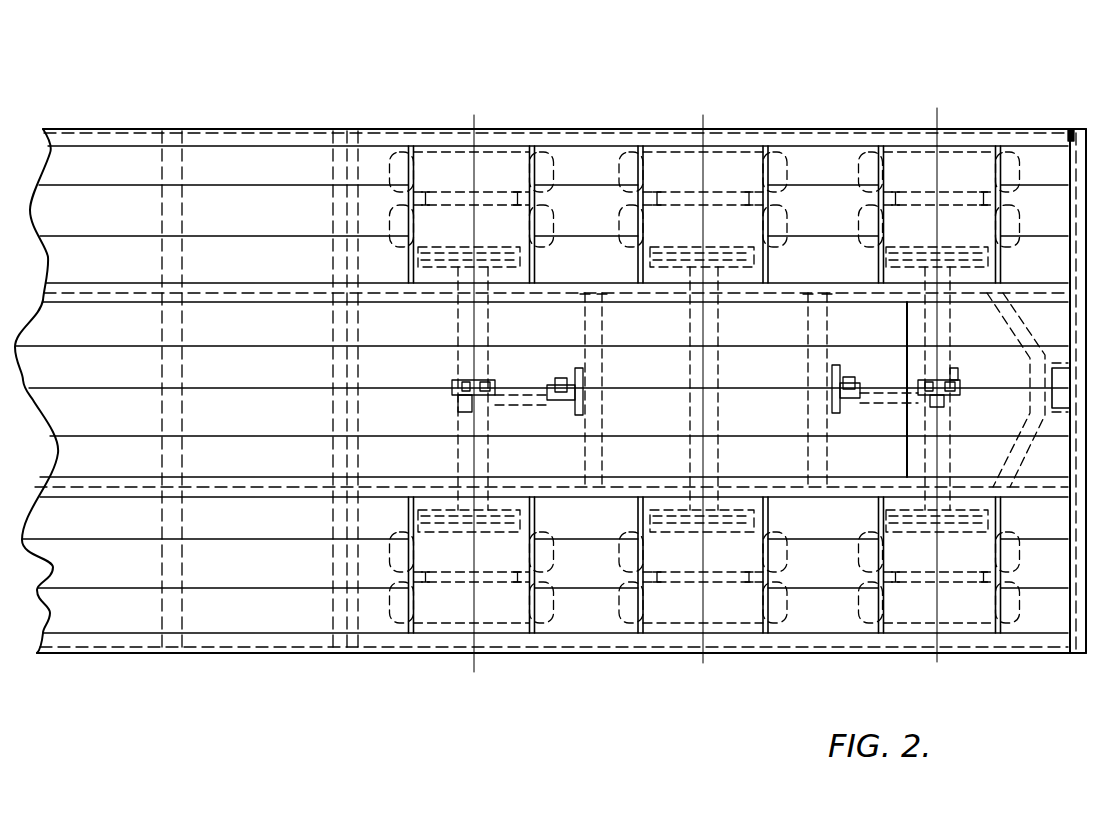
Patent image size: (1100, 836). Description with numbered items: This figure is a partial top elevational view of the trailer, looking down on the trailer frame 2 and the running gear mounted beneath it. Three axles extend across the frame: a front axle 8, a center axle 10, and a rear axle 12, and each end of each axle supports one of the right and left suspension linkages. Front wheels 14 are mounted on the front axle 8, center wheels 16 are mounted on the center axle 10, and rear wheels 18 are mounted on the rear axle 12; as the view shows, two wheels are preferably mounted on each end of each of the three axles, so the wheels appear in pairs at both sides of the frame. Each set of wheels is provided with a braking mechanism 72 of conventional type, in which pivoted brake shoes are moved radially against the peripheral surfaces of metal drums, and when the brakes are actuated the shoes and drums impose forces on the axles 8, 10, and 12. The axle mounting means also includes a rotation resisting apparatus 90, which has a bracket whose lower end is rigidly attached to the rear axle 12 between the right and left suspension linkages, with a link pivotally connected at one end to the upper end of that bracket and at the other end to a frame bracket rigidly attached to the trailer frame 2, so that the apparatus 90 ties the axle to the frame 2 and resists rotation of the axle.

The trailer frame 2 is at (524, 120).
The front axle 8 is at (490, 338).
The center axle 10 is at (712, 374).
The rear axle 12 is at (964, 367).
The front wheels 14 is at (432, 152).
The center wheels 16 is at (670, 163).
The rear wheels 18 is at (907, 160).
The braking mechanism 72 is at (866, 257).
The rotation resisting apparatus 90 is at (446, 380).